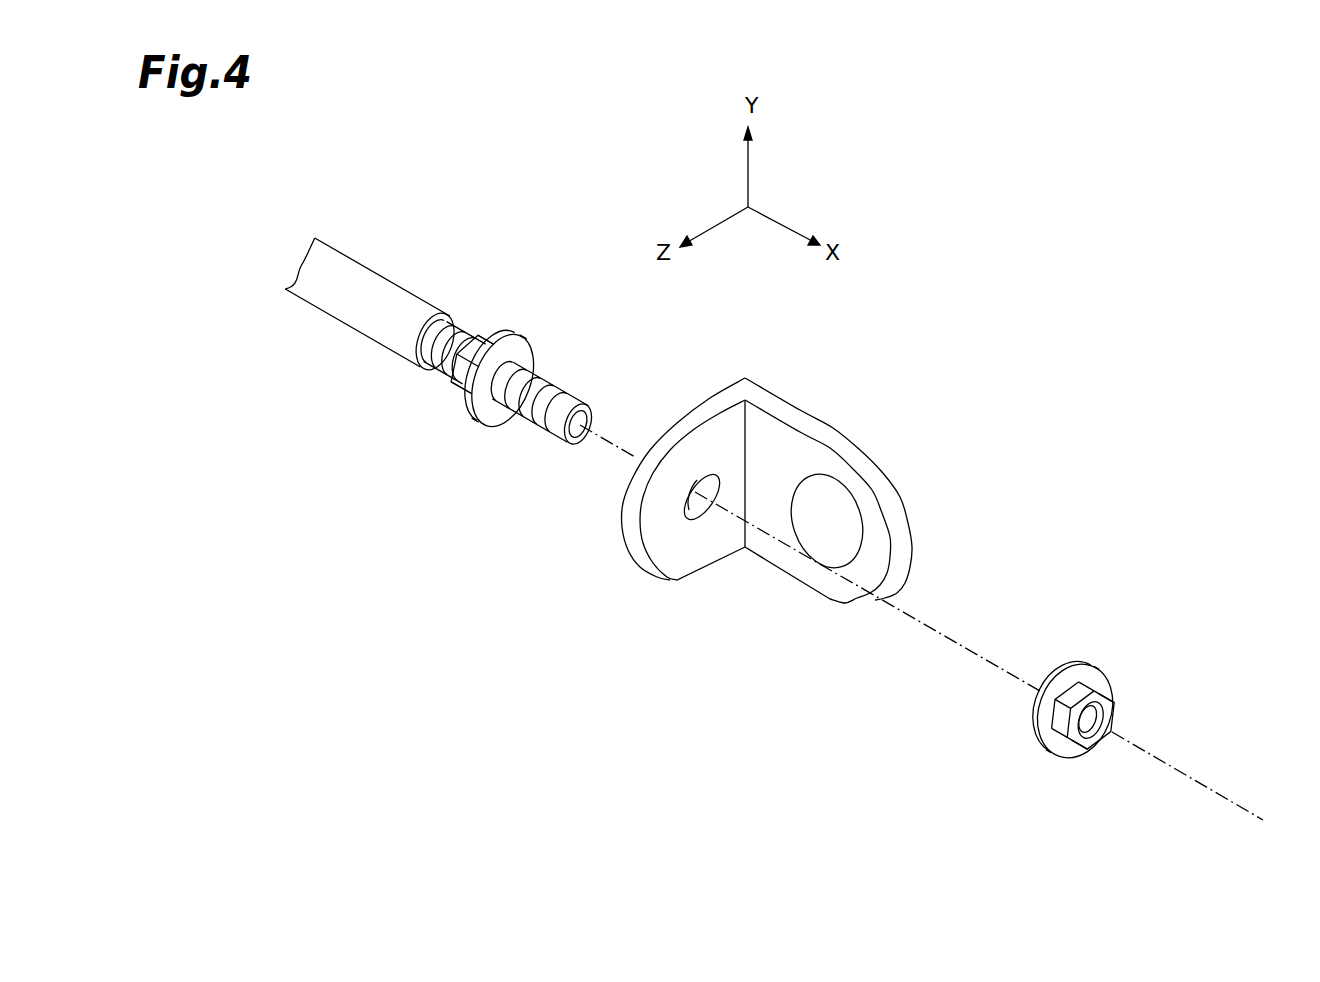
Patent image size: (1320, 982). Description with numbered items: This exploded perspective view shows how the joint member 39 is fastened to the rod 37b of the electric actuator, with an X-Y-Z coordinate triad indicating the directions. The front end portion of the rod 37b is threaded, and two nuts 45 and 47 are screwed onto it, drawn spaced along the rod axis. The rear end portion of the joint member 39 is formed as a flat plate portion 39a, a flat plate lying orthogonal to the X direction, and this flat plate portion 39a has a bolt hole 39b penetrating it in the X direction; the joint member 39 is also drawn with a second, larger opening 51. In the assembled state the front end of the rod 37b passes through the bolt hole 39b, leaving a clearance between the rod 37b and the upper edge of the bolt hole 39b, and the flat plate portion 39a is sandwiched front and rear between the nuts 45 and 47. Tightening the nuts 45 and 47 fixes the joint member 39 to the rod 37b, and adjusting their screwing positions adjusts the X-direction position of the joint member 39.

The rod 37b is at (368, 323).
The nut 45 is at (497, 343).
The joint member 39 is at (740, 506).
The flat plate portion 39a is at (692, 552).
The bolt hole 39b is at (691, 518).
The opening in bracket 51 is at (837, 522).
The nut 47 is at (1090, 683).